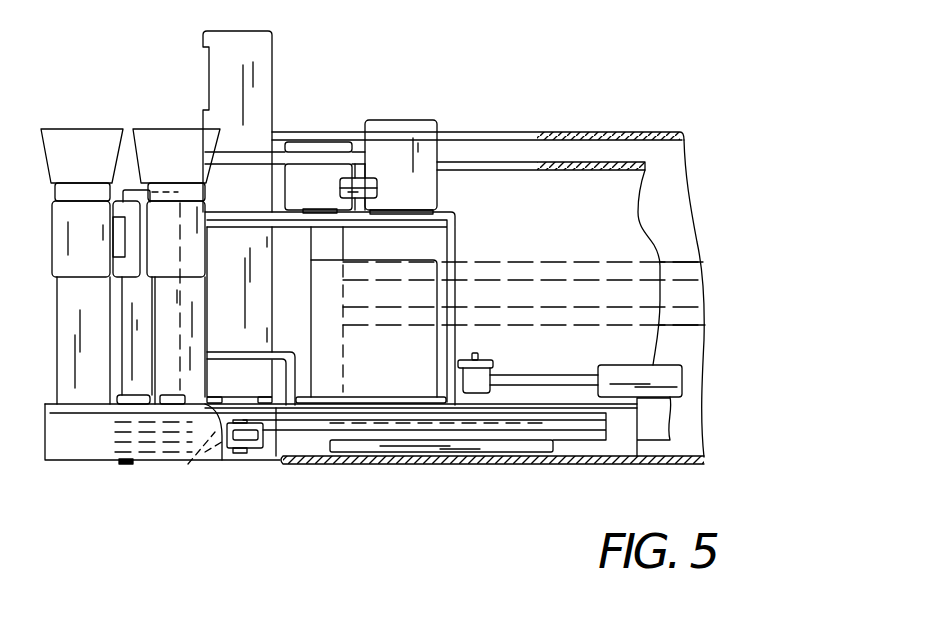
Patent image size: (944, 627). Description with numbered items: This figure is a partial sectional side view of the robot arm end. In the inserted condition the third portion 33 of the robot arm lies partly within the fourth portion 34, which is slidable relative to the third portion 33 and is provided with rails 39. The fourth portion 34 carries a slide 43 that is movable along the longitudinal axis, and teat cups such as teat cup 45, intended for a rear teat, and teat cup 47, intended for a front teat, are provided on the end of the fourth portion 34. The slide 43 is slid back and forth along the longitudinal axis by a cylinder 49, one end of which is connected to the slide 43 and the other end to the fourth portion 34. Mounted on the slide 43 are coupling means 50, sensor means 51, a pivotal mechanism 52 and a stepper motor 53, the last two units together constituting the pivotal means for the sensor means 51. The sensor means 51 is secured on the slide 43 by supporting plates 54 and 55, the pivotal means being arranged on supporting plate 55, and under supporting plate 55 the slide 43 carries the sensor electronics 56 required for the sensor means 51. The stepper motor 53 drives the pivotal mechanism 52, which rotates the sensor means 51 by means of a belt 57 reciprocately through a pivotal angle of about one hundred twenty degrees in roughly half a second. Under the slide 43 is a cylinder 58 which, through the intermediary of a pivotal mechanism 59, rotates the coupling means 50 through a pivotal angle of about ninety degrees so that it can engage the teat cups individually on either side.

The third portion 33 is at (633, 201).
The fourth portion 34 is at (595, 132).
The rails 39 is at (683, 304).
The slide 43 is at (582, 465).
The teat cup 45 is at (63, 128).
The teat cup 47 is at (184, 128).
The cylinder 49 is at (619, 364).
The coupling means 50 is at (129, 185).
The sensor means 51 is at (274, 77).
The pivotal mechanism 52 is at (325, 142).
The stepper motor 53 is at (418, 120).
The supporting plate 54 is at (283, 352).
The supporting plate 55 is at (289, 228).
The sensor electronics 56 is at (437, 343).
The belt 57 is at (226, 165).
The cylinder 58 is at (398, 453).
The pivotal mechanism 59 is at (190, 464).